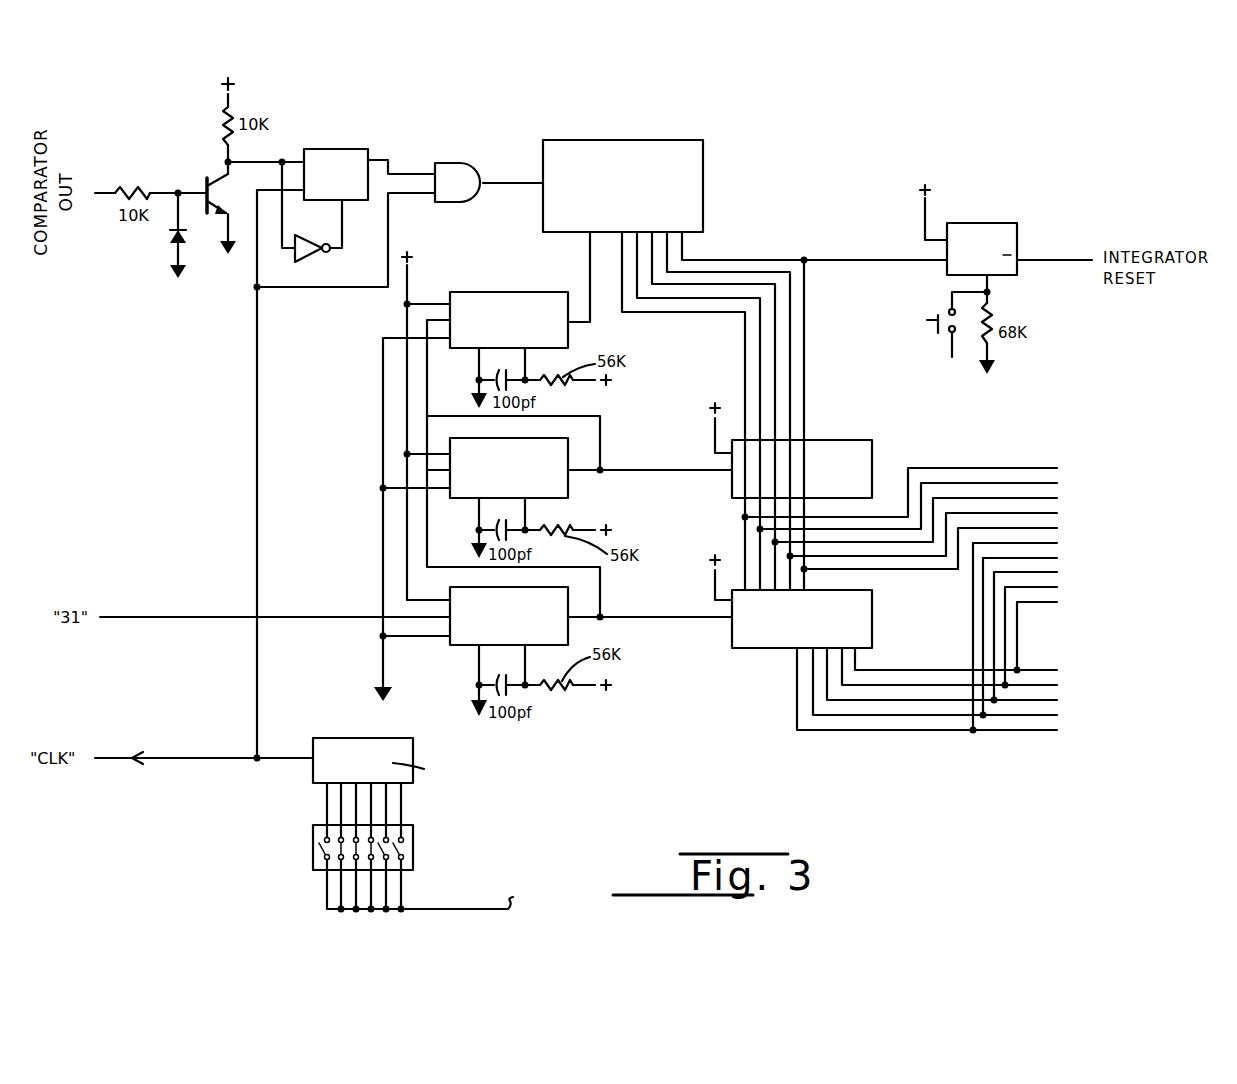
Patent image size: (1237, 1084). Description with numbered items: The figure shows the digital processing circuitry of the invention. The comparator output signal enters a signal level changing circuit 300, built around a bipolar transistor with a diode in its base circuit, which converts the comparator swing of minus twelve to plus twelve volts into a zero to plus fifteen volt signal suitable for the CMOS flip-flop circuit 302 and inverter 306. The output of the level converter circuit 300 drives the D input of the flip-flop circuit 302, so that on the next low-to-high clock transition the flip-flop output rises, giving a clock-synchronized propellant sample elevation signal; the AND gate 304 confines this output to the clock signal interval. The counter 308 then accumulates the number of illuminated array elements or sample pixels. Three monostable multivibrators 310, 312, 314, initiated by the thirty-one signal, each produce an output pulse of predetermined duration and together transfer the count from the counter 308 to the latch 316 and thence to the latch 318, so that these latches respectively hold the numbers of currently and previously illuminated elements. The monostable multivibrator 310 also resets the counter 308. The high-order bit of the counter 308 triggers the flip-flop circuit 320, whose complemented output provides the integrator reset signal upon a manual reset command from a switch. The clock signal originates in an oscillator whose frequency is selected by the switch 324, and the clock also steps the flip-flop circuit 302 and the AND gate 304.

The signal level changing circuit 300 is at (203, 170).
The flip-flop circuit 302 is at (345, 149).
The AND gate 304 is at (458, 163).
The inverter 306 is at (315, 260).
The counter 308 is at (703, 172).
The monostable multivibrator 310 is at (496, 292).
The monostable multivibrator 312 is at (568, 490).
The monostable multivibrator 314 is at (450, 645).
The latch 316 is at (872, 460).
The latch 318 is at (872, 628).
The flip-flop circuit 320 is at (1017, 232).
The switch 324 is at (312, 845).